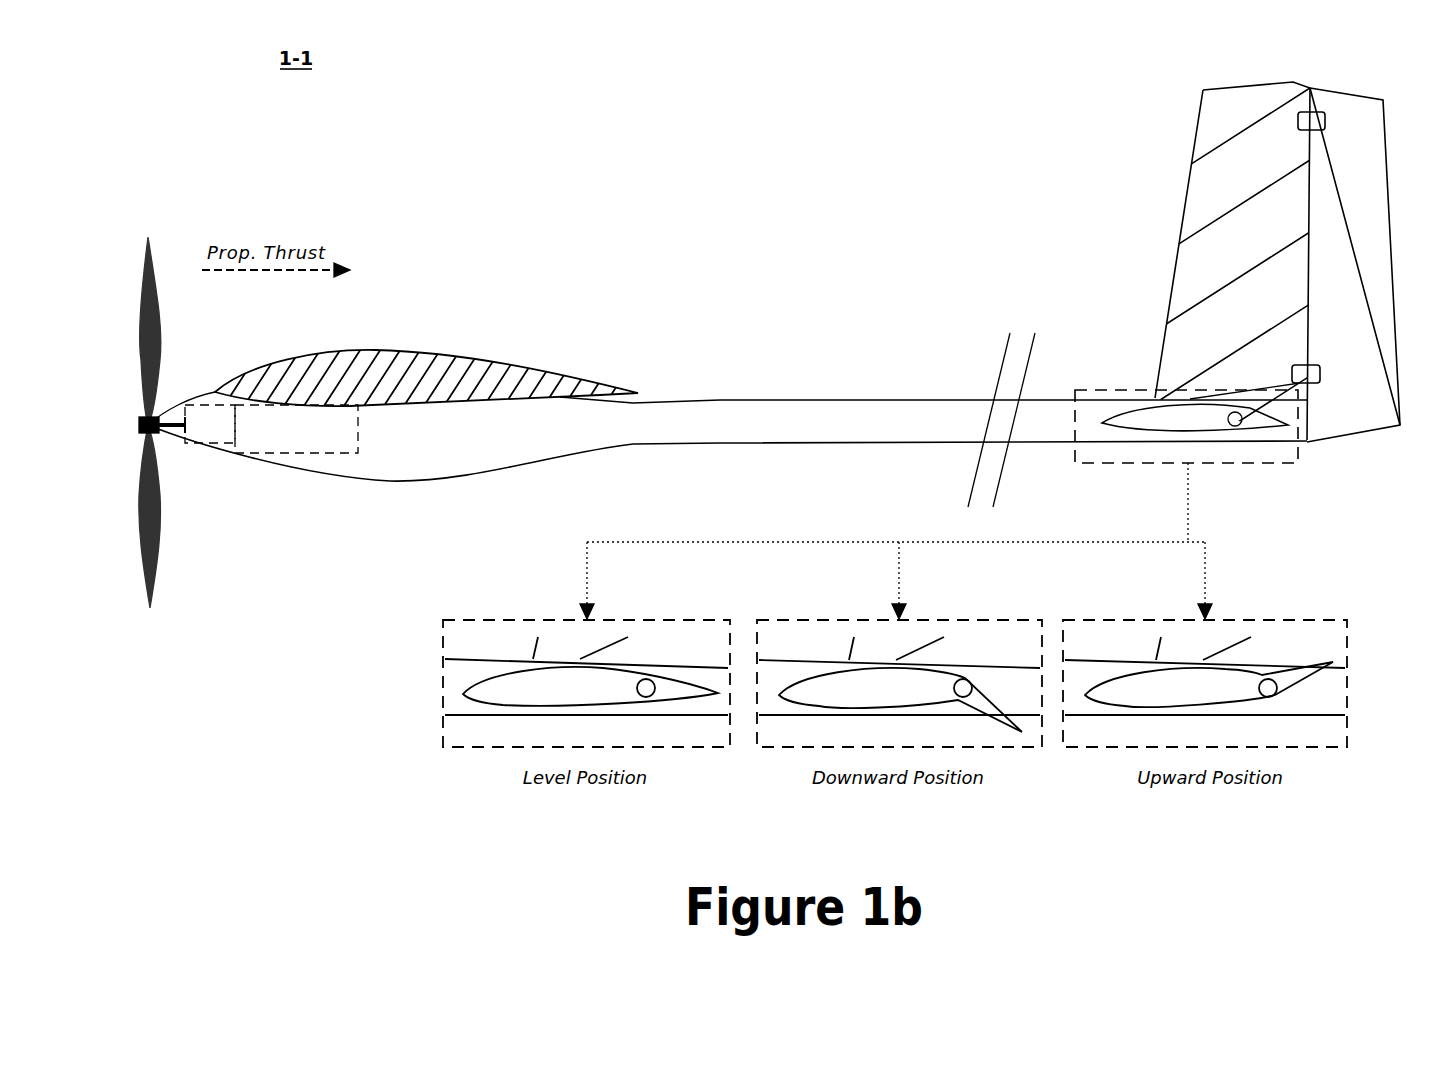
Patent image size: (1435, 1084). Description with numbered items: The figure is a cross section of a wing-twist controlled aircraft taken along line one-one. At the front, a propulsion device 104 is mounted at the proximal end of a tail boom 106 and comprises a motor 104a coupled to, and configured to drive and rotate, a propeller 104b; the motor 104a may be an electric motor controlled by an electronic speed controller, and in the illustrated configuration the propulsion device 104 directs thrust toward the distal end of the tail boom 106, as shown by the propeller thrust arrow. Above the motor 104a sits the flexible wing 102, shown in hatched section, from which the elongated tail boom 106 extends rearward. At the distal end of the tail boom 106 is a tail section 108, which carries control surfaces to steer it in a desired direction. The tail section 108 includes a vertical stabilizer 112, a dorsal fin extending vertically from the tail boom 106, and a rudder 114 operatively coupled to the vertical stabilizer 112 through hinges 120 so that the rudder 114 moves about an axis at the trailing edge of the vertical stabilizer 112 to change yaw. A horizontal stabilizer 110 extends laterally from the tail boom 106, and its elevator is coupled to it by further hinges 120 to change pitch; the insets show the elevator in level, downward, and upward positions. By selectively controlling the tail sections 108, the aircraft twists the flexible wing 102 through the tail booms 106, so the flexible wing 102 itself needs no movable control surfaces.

The flexible wing 102 is at (370, 350).
The propulsion device 104 is at (234, 465).
The motor 104a is at (271, 429).
The propeller 104b is at (167, 508).
The tail boom 106 is at (725, 444).
The tail section 108 is at (1251, 275).
The horizontal stabilizer 110 is at (1172, 433).
The vertical stabilizer 112 is at (1180, 223).
The rudder 114 is at (1377, 433).
The hinge 120 is at (1317, 133).